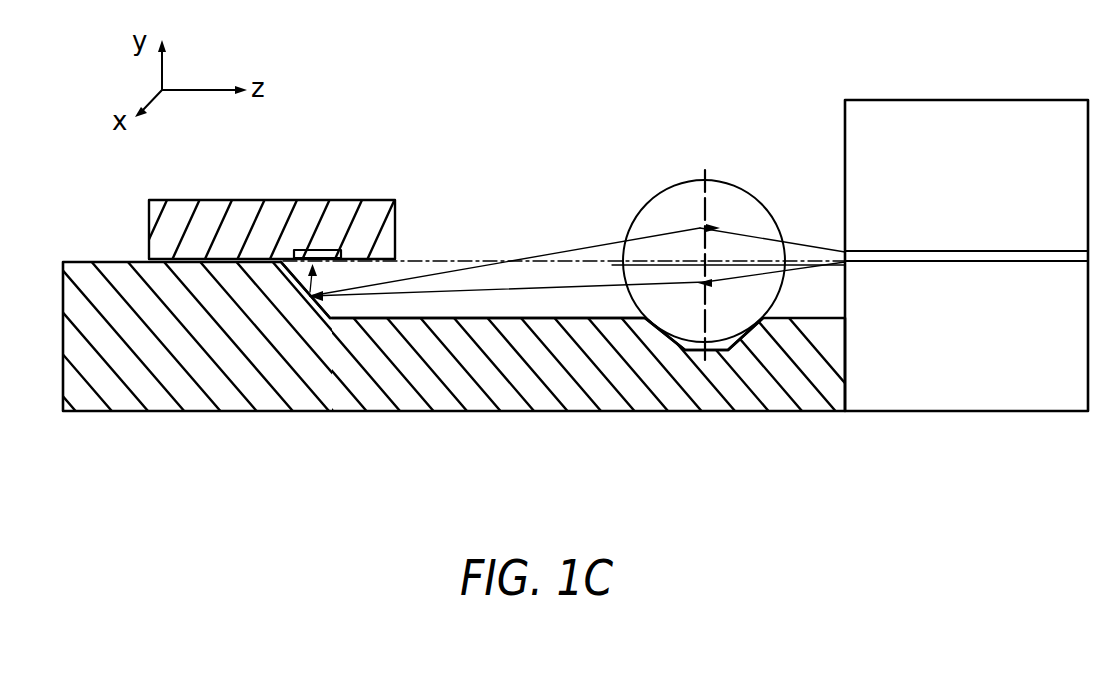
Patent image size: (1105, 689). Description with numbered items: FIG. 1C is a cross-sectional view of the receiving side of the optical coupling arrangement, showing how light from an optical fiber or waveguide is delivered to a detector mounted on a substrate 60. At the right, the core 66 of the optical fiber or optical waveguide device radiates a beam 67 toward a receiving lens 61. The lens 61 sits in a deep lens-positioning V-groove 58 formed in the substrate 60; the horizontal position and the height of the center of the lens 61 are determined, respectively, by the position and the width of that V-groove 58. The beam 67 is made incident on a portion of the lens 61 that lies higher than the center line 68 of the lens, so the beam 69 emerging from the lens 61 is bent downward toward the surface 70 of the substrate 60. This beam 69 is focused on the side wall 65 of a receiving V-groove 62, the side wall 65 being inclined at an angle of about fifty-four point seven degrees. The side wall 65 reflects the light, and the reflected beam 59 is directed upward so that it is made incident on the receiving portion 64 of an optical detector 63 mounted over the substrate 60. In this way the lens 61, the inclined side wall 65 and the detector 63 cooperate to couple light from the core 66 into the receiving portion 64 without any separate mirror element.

The lens-positioning V-groove 58 is at (678, 340).
The reflected beam 59 is at (310, 280).
The substrate 60 is at (127, 290).
The receiving lens 61 is at (635, 198).
The receiving V-groove 62 is at (583, 305).
The optical detector 63 is at (276, 194).
The receiving portion 64 is at (324, 250).
The side wall 65 is at (309, 300).
The core 66 is at (843, 150).
The beam 67 is at (800, 255).
The center line 68 is at (683, 262).
The beam from the lens 69 is at (448, 280).
The surface 70 is at (520, 261).